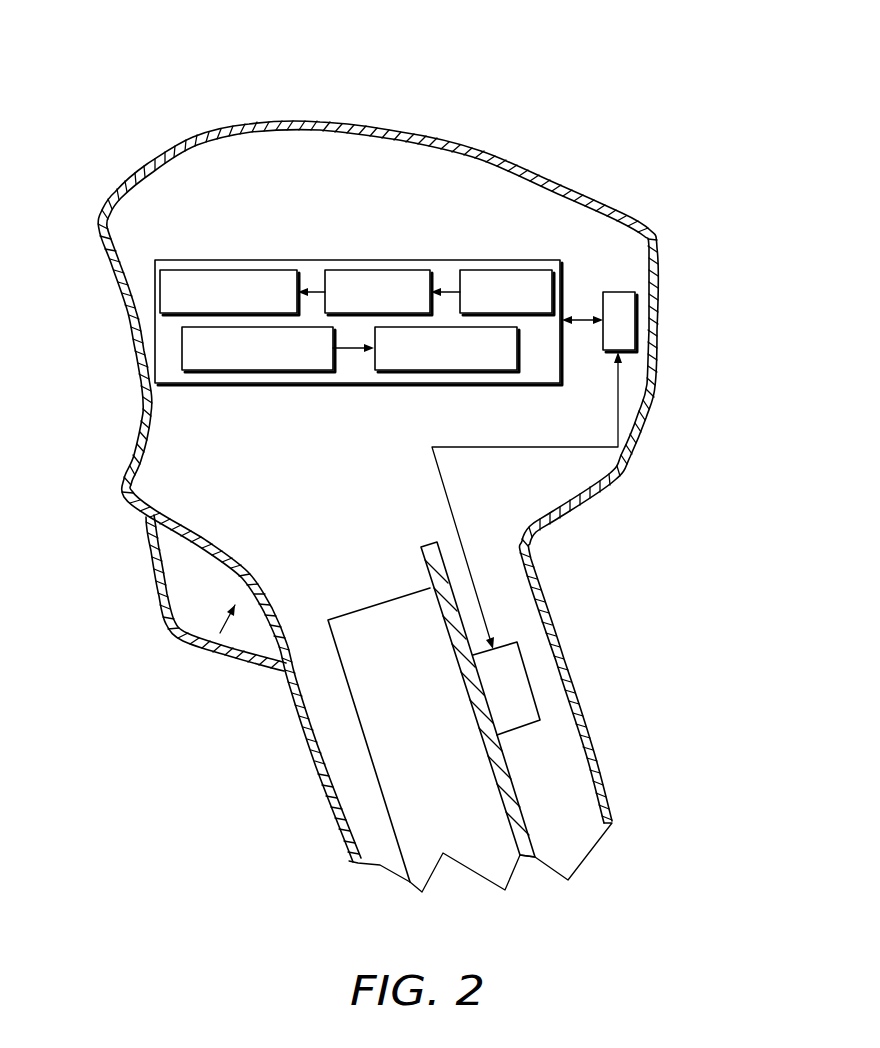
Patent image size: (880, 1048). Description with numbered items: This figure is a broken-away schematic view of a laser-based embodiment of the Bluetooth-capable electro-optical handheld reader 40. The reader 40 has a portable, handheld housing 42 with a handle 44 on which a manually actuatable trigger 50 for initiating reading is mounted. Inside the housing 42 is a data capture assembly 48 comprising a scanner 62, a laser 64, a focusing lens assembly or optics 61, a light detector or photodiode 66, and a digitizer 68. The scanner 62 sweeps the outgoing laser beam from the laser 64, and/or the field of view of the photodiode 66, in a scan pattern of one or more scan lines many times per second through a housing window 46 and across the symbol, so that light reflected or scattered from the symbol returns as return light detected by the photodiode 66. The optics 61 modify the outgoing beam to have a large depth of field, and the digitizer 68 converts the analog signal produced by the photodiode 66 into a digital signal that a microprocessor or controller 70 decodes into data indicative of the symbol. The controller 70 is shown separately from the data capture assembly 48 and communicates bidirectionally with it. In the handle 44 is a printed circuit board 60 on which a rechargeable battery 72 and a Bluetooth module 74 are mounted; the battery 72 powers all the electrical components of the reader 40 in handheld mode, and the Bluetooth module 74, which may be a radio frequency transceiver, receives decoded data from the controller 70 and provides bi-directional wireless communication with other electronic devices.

The handheld reader 40 is at (673, 265).
The housing 42 is at (658, 310).
The handle 44 is at (543, 597).
The housing window 46 is at (133, 350).
The data capture assembly 48 is at (313, 258).
The trigger 50 is at (205, 675).
The printed circuit board 60 is at (433, 545).
The optics 61 is at (380, 270).
The scanner 62 is at (230, 270).
The laser 64 is at (507, 270).
The photodiode 66 is at (255, 372).
The digitizer 68 is at (455, 372).
The controller 70 is at (618, 292).
The rechargeable battery 72 is at (358, 611).
The Bluetooth module 74 is at (527, 713).